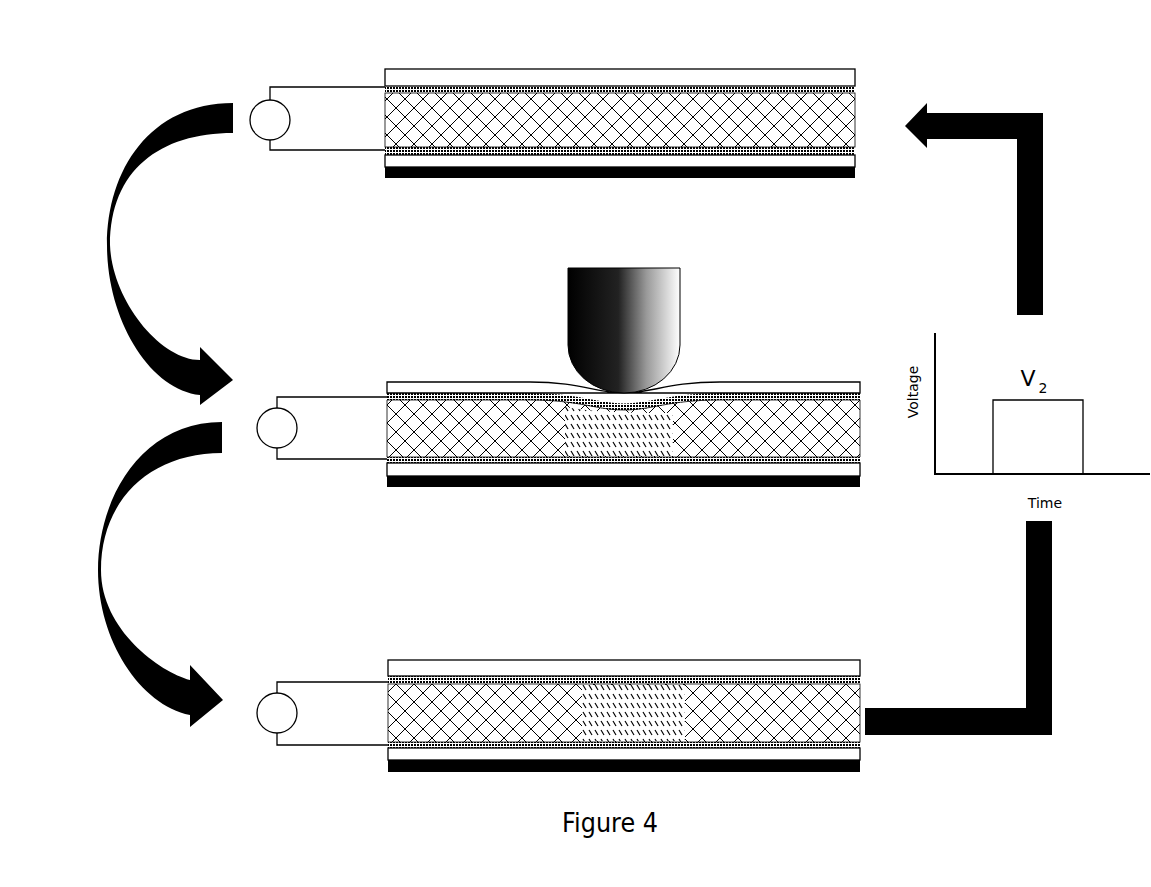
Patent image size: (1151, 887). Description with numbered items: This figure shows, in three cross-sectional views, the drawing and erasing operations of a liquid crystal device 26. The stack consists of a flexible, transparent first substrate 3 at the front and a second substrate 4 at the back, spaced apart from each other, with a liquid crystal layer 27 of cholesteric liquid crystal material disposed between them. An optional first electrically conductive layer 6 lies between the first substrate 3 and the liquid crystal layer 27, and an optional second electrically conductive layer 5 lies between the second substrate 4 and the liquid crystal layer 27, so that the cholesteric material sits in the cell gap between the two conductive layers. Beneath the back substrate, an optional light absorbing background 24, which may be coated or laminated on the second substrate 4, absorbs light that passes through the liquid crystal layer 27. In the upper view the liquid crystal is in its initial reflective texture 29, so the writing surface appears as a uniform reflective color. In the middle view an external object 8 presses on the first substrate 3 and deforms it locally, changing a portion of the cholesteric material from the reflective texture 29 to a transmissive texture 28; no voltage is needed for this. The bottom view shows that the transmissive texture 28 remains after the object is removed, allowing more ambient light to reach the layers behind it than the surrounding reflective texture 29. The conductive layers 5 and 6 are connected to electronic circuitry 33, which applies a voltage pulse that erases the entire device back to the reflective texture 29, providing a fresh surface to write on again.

The first substrate 3 is at (442, 75).
The first electrically conductive layer 6 is at (687, 83).
The liquid crystal layer 27 is at (603, 130).
The reflective texture 29 is at (517, 125).
The transmissive texture 28 is at (632, 430).
The second electrically conductive layer 5 is at (407, 152).
The second substrate 4 is at (617, 161).
The light absorbing background 24 is at (763, 178).
The liquid crystal device 26 is at (641, 133).
The electronic circuitry 33 is at (319, 416).
The external object 8 is at (622, 322).